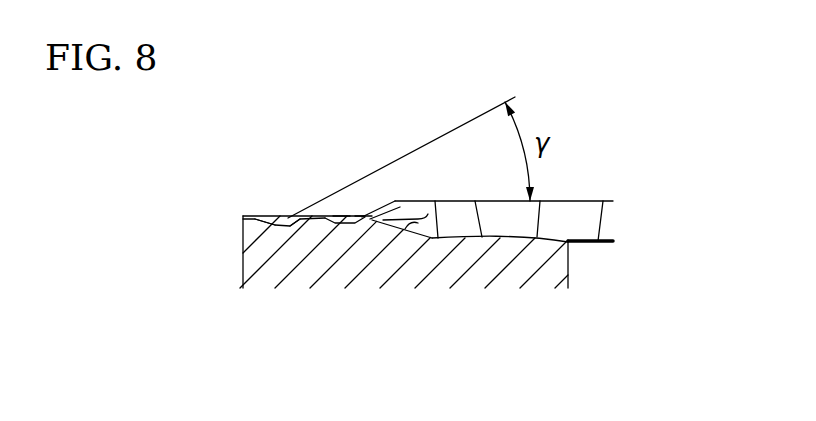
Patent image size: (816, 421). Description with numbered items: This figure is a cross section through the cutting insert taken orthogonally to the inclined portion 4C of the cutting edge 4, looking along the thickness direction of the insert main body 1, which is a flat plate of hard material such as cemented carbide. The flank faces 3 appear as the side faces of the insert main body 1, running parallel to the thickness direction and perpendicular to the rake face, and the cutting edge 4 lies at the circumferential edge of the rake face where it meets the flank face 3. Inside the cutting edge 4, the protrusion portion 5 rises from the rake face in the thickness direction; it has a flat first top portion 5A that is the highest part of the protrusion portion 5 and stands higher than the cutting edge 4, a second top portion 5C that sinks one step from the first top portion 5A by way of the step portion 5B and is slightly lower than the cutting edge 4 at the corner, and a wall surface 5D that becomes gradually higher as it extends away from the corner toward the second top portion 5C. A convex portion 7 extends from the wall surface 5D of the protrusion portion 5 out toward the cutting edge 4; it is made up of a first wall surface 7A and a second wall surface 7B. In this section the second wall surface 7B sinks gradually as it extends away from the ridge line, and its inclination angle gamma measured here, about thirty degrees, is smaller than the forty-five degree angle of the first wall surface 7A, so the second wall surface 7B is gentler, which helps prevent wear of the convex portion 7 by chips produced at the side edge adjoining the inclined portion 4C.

The insert main body 1 is at (243, 276).
The flank face 3 is at (243, 250).
The cutting edge 4 is at (243, 216).
The inclined portion 4C is at (263, 183).
The protrusion portion 5 is at (437, 48).
The first top portion 5A is at (457, 201).
The step portion 5B is at (422, 214).
The second top portion 5C is at (363, 216).
The wall surface 5D is at (341, 215).
The convex portion 7 is at (308, 115).
The first wall surface 7A is at (332, 216).
The second wall surface 7B is at (288, 217).